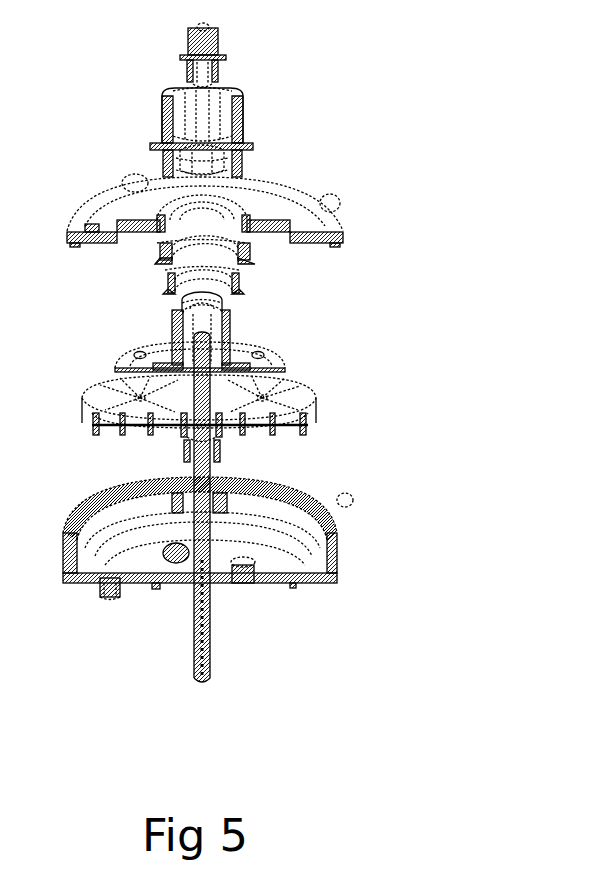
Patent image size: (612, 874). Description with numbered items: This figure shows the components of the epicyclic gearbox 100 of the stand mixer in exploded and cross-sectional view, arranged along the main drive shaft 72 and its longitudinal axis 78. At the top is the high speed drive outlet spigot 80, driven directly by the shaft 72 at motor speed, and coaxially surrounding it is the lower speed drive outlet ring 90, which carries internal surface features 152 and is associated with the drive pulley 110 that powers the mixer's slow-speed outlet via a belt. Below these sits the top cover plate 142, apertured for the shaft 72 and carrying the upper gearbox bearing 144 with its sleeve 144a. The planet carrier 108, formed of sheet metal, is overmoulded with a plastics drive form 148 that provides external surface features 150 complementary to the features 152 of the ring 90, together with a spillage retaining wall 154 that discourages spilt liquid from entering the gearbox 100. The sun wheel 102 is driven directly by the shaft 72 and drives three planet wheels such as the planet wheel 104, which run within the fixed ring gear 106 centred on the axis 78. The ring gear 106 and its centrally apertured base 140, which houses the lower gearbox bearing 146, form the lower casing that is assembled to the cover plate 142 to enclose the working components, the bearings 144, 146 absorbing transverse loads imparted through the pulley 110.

The high speed drive outlet spigot 80 is at (207, 43).
The drive outlet ring 90 is at (235, 127).
The drive pulley 110 is at (247, 152).
The internal surface features 152 is at (187, 157).
The top cover plate 142 is at (302, 203).
The upper gearbox bearing 144 is at (157, 256).
The sleeve 144a is at (237, 282).
The spillage retaining wall 154 is at (181, 305).
The external surface features 150 is at (173, 342).
The plastics drive form 148 is at (242, 324).
The planet carrier 108 is at (273, 360).
The planet wheel 104 is at (297, 395).
The sun wheel 102 is at (212, 432).
The main drive shaft 72 is at (198, 470).
The longitudinal axis 78 is at (210, 623).
The ring gear 106 is at (298, 503).
The lower gearbox bearing 146 is at (180, 510).
The base 140 is at (273, 557).
The epicyclic gearbox 100 is at (442, 293).